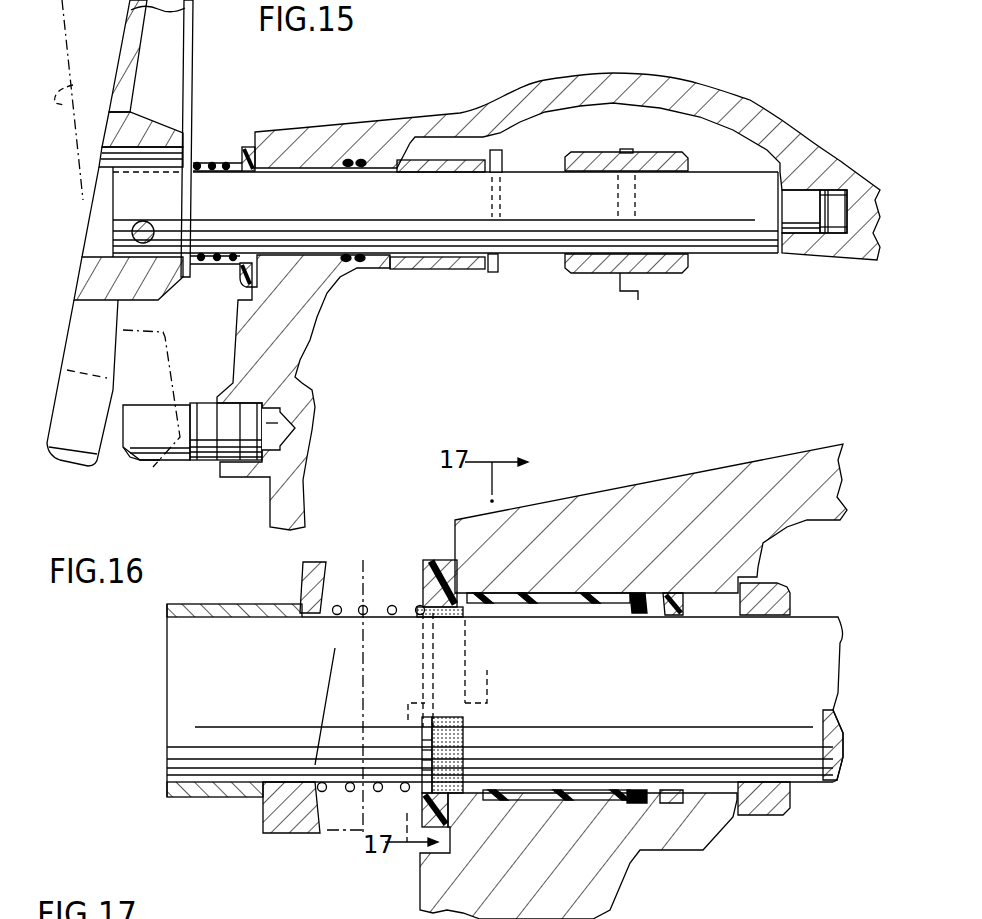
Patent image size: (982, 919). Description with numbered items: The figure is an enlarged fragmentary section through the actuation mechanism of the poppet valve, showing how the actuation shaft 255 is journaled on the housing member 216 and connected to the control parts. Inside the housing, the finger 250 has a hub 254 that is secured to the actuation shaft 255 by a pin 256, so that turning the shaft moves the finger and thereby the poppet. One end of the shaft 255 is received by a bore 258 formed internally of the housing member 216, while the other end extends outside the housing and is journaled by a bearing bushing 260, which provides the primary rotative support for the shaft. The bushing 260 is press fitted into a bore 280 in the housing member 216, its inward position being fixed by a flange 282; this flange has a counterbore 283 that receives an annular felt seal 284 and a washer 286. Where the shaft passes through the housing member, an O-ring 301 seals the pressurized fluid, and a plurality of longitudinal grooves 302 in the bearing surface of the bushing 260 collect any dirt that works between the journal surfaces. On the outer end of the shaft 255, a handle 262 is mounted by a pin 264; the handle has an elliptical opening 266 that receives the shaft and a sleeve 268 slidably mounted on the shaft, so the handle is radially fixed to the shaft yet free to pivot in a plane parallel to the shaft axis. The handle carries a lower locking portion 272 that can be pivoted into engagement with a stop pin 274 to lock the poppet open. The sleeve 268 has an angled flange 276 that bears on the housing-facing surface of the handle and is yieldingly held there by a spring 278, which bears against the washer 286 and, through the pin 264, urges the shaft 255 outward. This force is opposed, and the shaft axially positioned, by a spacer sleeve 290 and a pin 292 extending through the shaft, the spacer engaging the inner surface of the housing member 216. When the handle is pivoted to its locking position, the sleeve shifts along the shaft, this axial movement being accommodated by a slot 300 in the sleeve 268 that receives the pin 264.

In FIG. 15, the housing member 216 is at (670, 78).
In FIG. 16, the housing member 216 is at (653, 480).
In FIG. 15, the finger 250 is at (640, 282).
In FIG. 15, the hub 254 is at (689, 160).
In FIG. 15, the actuation shaft 255 is at (546, 268).
In FIG. 16, the actuation shaft 255 is at (173, 668).
In FIG. 15, the pin 256 is at (627, 148).
In FIG. 15, the bore 258 is at (800, 228).
In FIG. 16, the bearing bushing 260 is at (440, 553).
In FIG. 15, the handle 262 is at (113, 87).
In FIG. 15, the pin 264 is at (143, 221).
In FIG. 15, the elliptical opening 266 is at (100, 163).
In FIG. 15, the sleeve 268 is at (163, 331).
In FIG. 16, the sleeve 268 is at (207, 602).
In FIG. 15, the locking portion 272 is at (122, 378).
In FIG. 15, the stop pin 274 is at (147, 462).
In FIG. 15, the angled flange 276 is at (184, 280).
In FIG. 16, the angled flange 276 is at (330, 560).
In FIG. 16, the spring 278 is at (333, 655).
In FIG. 16, the bore 280 is at (590, 608).
In FIG. 16, the flange 282 is at (412, 615).
In FIG. 16, the counterbore 283 is at (453, 617).
In FIG. 16, the annular felt seal 284 is at (467, 737).
In FIG. 16, the washer 286 is at (420, 733).
In FIG. 15, the spacer sleeve 290 is at (430, 270).
In FIG. 16, the spacer sleeve 290 is at (767, 817).
In FIG. 15, the pin 292 is at (500, 272).
In FIG. 15, the slot 300 is at (113, 232).
In FIG. 16, the O-ring 301 is at (663, 615).
In FIG. 16, the longitudinal grooves 302 is at (528, 790).